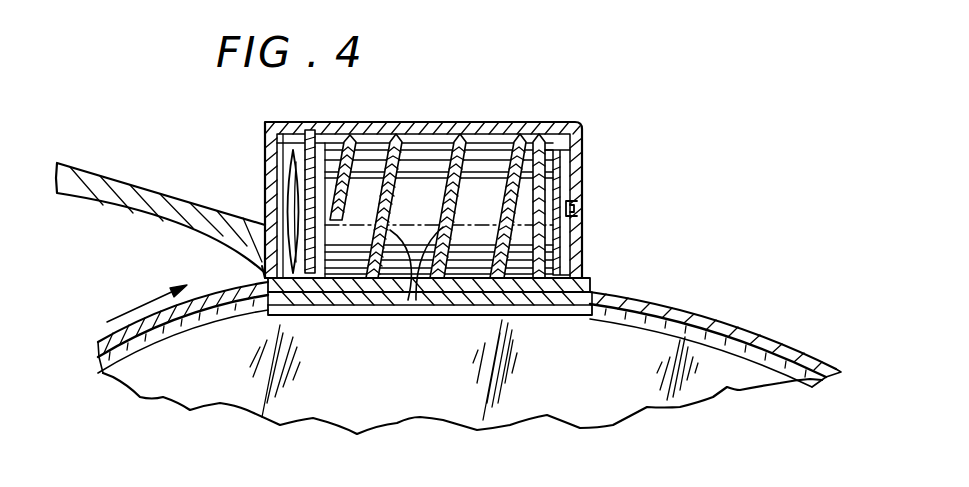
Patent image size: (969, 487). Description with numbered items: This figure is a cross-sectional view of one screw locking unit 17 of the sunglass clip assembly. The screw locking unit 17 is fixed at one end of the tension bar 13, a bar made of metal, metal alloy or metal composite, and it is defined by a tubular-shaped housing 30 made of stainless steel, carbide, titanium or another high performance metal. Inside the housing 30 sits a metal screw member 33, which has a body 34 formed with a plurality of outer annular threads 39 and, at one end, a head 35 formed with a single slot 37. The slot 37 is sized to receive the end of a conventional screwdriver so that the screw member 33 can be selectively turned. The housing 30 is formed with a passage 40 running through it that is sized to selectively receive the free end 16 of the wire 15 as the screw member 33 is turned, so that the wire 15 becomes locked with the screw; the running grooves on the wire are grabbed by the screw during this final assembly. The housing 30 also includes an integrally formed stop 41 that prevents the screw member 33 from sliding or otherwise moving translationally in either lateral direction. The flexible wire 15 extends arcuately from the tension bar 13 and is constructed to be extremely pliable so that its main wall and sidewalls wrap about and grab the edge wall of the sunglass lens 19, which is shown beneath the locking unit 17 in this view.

The tension bar 13 is at (152, 191).
The wire 15 is at (742, 320).
The free end 16 is at (586, 280).
The screw locking unit 17 is at (614, 84).
The sunglass lens 19 is at (727, 387).
The housing 30 is at (454, 121).
The screw member 33 is at (494, 146).
The body 34 is at (390, 120).
The head 35 is at (572, 172).
The slot 37 is at (579, 210).
The outer annular threads 39 is at (404, 302).
The passage 40 is at (262, 276).
The stop 41 is at (313, 135).